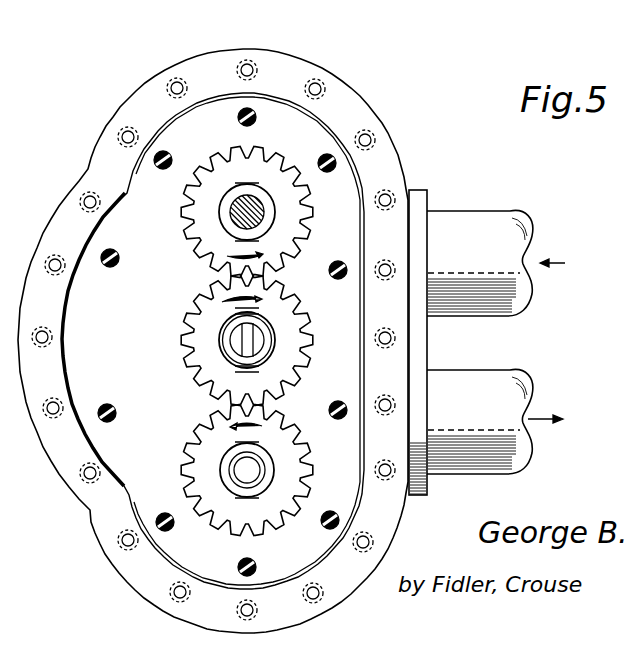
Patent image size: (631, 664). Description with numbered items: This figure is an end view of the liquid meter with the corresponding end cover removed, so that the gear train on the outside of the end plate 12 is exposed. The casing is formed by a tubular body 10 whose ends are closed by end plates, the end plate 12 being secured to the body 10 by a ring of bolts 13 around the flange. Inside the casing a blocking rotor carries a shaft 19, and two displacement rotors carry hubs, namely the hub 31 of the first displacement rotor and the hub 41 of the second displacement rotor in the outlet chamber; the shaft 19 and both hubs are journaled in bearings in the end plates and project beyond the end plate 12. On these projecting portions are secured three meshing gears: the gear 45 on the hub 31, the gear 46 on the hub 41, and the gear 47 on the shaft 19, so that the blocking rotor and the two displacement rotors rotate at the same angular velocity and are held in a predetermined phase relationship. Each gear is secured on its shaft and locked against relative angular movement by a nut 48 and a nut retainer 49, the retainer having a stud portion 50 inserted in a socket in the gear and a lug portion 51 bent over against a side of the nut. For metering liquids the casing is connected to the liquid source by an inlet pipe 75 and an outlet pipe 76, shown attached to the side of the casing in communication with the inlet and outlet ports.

The body 10 is at (137, 88).
The end plate 12 is at (308, 138).
The bolts 13 is at (213, 545).
The shaft 19 is at (227, 350).
The hub 31 is at (231, 212).
The hub 41 is at (233, 470).
The gear 45 is at (300, 193).
The gear 46 is at (345, 503).
The gear 47 is at (293, 352).
The nut 48 is at (227, 323).
The nut retainer 49 is at (222, 197).
The stud portion 50 is at (250, 186).
The lug portion 51 is at (205, 248).
The inlet pipe 75 is at (490, 222).
The outlet pipe 76 is at (497, 381).